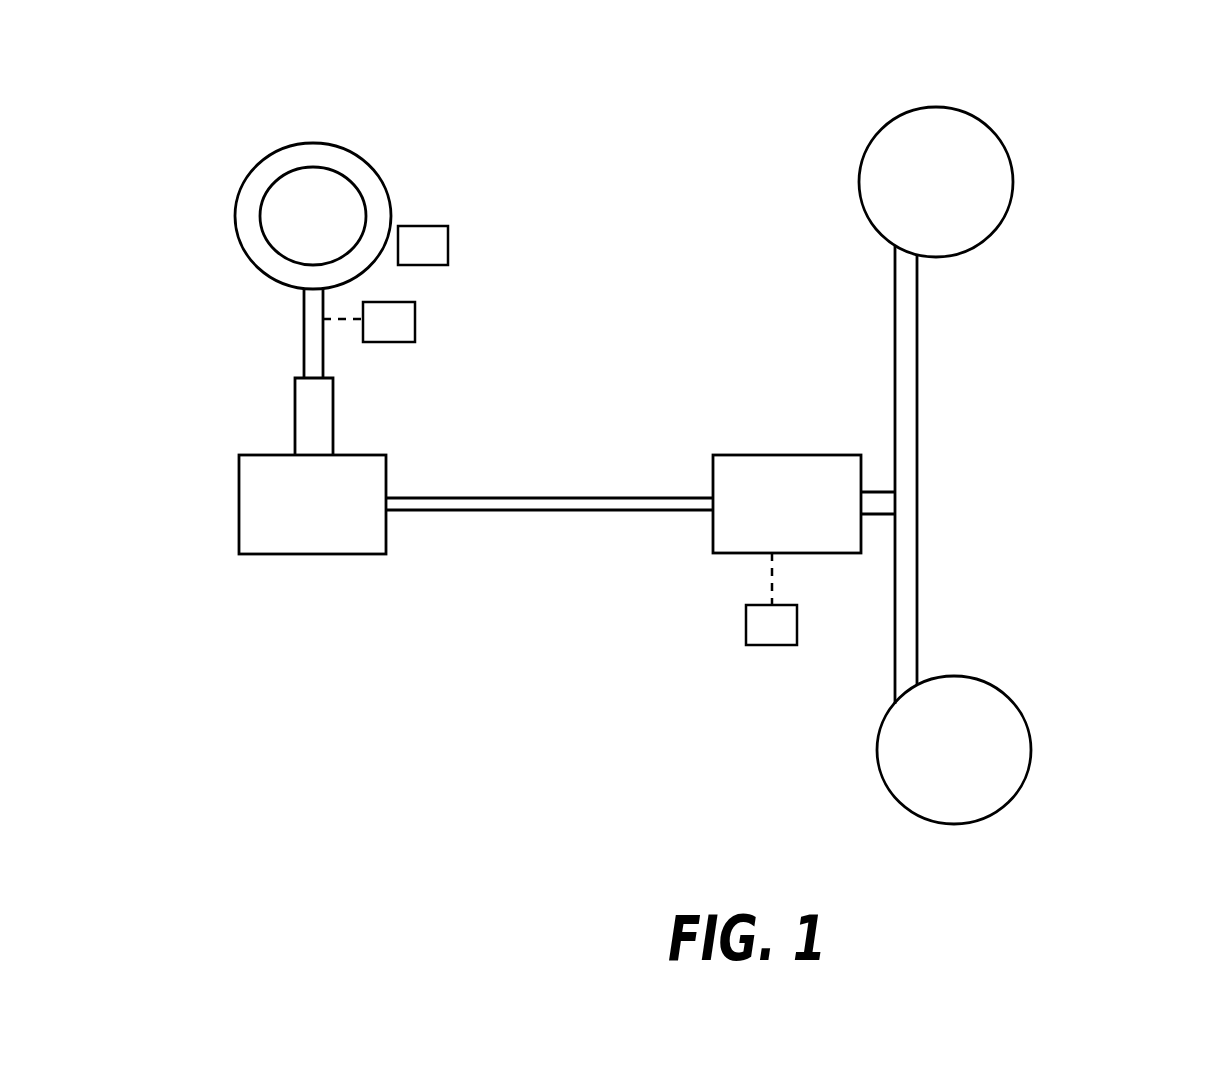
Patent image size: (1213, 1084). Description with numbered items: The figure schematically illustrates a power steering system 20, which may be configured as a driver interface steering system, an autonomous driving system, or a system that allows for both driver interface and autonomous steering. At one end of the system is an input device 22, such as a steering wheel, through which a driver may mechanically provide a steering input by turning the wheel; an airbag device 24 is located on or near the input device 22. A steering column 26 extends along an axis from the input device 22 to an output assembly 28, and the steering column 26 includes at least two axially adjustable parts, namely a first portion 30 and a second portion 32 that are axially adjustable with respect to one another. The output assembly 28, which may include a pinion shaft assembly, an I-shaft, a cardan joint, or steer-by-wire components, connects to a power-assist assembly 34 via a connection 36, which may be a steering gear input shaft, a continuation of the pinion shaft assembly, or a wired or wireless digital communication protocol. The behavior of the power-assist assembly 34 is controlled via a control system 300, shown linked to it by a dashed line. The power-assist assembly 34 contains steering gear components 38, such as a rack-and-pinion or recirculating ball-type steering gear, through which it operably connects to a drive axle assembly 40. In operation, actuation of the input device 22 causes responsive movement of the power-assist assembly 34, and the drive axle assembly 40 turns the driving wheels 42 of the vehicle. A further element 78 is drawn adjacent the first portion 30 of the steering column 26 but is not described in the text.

The power steering system 20 is at (1140, 101).
The input device 22 is at (255, 168).
The airbag device 24 is at (434, 260).
The steering column 26 is at (196, 330).
The output assembly 28 is at (324, 518).
The first portion 30 is at (286, 337).
The second portion 32 is at (286, 443).
The power-assist assembly 34 is at (798, 518).
The connection 36 is at (690, 495).
The steering gear components 38 is at (883, 490).
The drive axle assembly 40 is at (905, 537).
The driving wheels 42 is at (987, 240).
The sensor 78 is at (400, 337).
The control system 300 is at (788, 640).